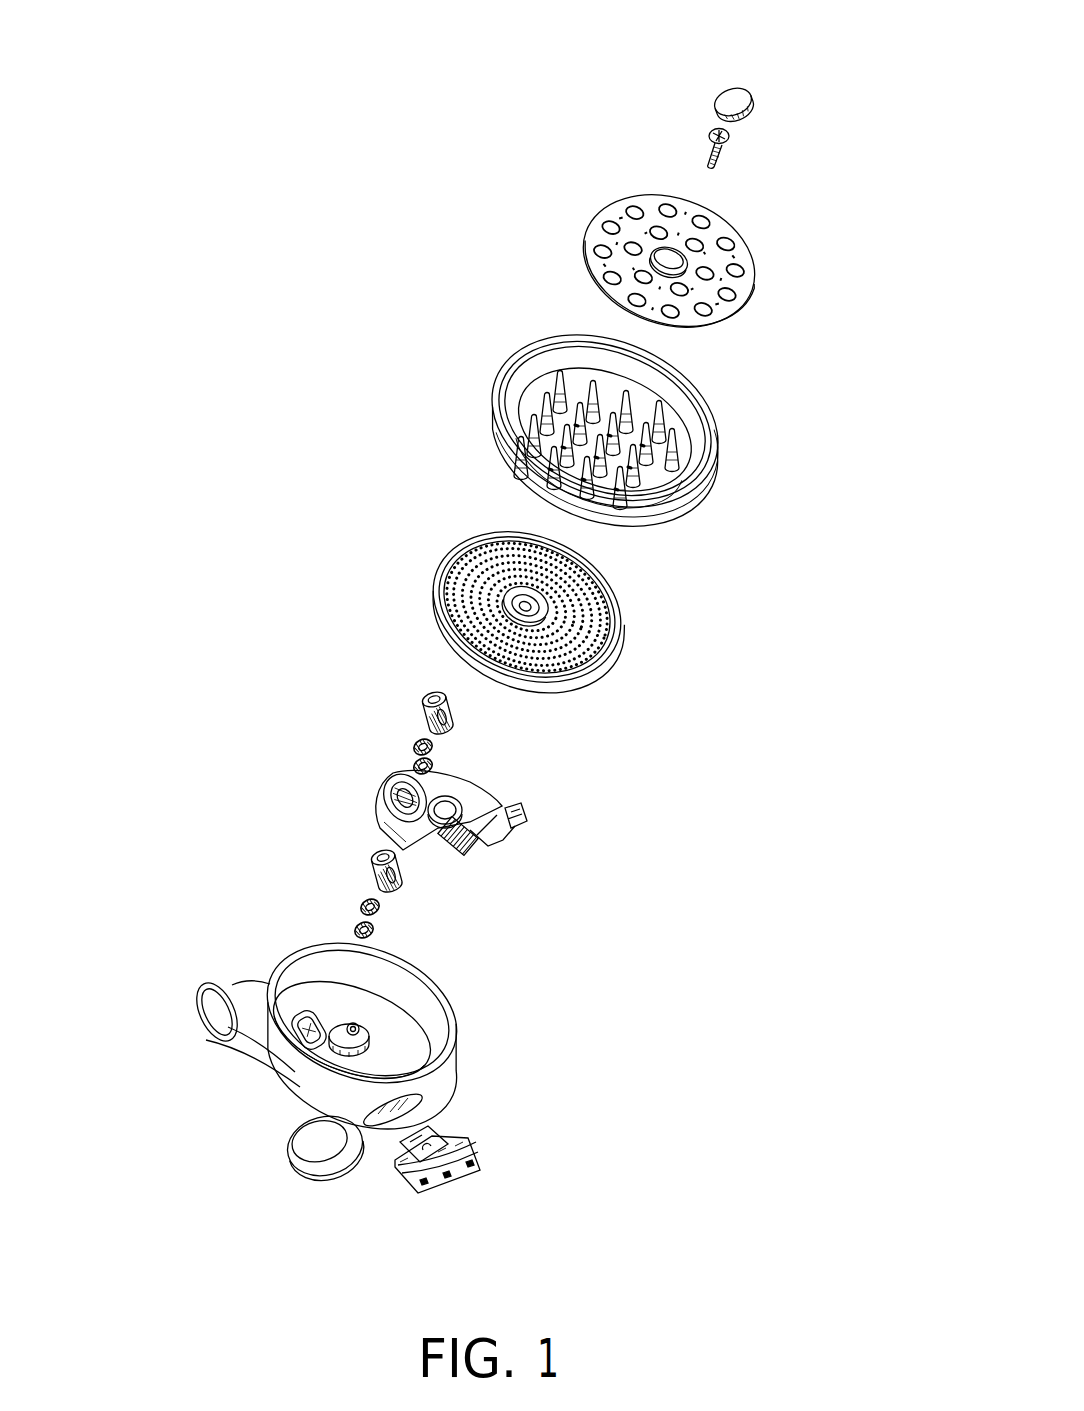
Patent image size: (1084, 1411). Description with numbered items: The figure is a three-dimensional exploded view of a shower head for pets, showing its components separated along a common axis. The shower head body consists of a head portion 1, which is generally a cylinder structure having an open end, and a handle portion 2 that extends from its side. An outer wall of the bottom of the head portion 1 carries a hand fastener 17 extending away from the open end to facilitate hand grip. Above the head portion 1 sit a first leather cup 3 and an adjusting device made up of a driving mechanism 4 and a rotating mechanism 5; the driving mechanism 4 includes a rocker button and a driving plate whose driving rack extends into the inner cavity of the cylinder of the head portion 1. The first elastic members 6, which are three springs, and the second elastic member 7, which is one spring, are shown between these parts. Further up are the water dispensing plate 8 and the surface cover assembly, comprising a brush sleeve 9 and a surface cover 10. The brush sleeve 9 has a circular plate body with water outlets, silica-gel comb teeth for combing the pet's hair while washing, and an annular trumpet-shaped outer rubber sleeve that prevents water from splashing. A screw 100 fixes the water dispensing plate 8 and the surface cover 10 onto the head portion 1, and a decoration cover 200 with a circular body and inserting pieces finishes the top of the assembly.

The head portion 1 is at (317, 966).
The handle portion 2 is at (217, 1047).
The first leather cup 3 is at (403, 858).
The driving mechanism 4 is at (480, 1147).
The rotating mechanism 5 is at (520, 818).
The first elastic members 6 is at (366, 898).
The second elastic member 7 is at (374, 928).
The water dispensing plate 8 is at (443, 568).
The brush sleeve 9 is at (520, 373).
The surface cover 10 is at (748, 277).
The hand fastener 17 is at (293, 1158).
The screw 100 is at (736, 137).
The decoration cover 200 is at (733, 100).